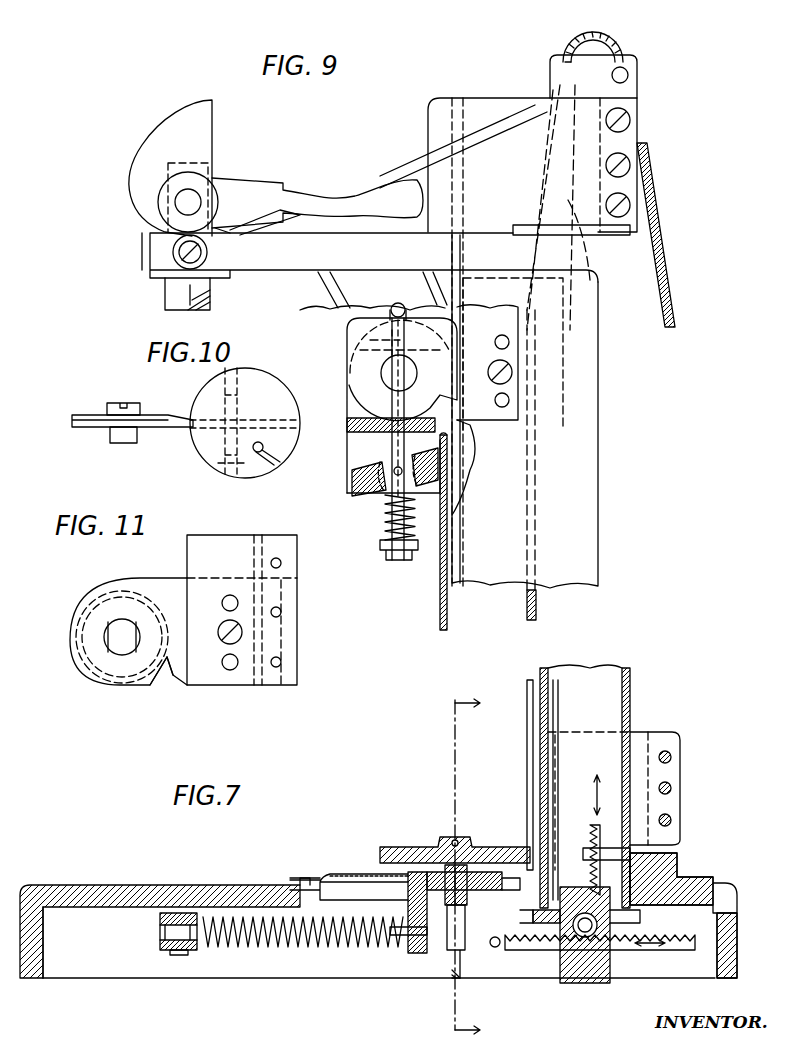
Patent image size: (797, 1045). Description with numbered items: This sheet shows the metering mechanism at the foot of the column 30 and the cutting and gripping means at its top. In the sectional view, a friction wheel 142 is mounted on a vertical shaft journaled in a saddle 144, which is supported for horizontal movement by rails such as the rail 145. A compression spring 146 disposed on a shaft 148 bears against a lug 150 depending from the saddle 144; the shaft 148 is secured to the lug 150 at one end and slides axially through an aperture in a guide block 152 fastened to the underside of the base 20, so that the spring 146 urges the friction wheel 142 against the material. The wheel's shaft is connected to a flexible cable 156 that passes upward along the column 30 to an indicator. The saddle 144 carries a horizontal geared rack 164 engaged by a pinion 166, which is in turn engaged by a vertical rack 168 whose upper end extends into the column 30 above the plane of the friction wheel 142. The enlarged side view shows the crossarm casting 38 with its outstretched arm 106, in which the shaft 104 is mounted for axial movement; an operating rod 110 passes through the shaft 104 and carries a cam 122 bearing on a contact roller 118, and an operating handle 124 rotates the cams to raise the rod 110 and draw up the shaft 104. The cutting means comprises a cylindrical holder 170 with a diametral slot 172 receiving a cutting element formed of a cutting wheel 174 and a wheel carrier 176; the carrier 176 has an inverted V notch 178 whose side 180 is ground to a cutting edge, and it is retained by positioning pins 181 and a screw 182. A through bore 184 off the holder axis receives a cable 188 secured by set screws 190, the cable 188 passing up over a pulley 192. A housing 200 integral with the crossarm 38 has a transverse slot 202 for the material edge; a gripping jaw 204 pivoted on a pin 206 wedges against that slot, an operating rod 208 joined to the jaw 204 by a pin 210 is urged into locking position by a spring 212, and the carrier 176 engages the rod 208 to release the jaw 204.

In FIG. 7, the base 20 is at (182, 885).
In FIG. 7, the column 30 is at (632, 705).
In FIG. 9, the crossarm 38 is at (425, 98).
In FIG. 9, the shaft 104 is at (178, 290).
In FIG. 9, the outstretched arm 106 is at (290, 262).
In FIG. 9, the operating rod 110 is at (190, 202).
In FIG. 9, the contact roller 118 is at (178, 254).
In FIG. 9, the cam 122 is at (152, 163).
In FIG. 9, the operating handle 124 is at (348, 195).
In FIG. 7, the friction wheel 142 is at (495, 847).
In FIG. 7, the saddle 144 is at (385, 876).
In FIG. 7, the rail 145 is at (335, 878).
In FIG. 7, the compression spring 146 is at (255, 945).
In FIG. 7, the shaft 148 is at (280, 947).
In FIG. 7, the lug 150 is at (408, 948).
In FIG. 7, the guide block 152 is at (160, 950).
In FIG. 7, the flexible cable 156 is at (462, 957).
In FIG. 7, the geared rack 164 is at (675, 942).
In FIG. 7, the pinion 166 is at (578, 887).
In FIG. 7, the rack 168 is at (590, 840).
In FIG. 9, the holder 170 is at (490, 420).
In FIG. 11, the holder 170 is at (215, 535).
In FIG. 10, the slot 172 is at (215, 428).
In FIG. 10, the cutting wheel 174 is at (95, 415).
In FIG. 9, the wheel carrier 176 is at (350, 330).
In FIG. 10, the wheel carrier 176 is at (90, 440).
In FIG. 11, the wheel carrier 176 is at (160, 578).
In FIG. 11, the notch 178 is at (160, 670).
In FIG. 11, the side of notch 180 is at (173, 678).
In FIG. 9, the positioning pins 181 is at (495, 342).
In FIG. 11, the positioning pins 181 is at (224, 600).
In FIG. 9, the screw 182 is at (490, 372).
In FIG. 11, the screw 182 is at (220, 636).
In FIG. 9, the through bore 184 is at (345, 426).
In FIG. 10, the through bore 184 is at (262, 447).
In FIG. 9, the cable 188 is at (525, 604).
In FIG. 11, the set screws 190 is at (282, 565).
In FIG. 9, the pulley 192 is at (570, 54).
In FIG. 9, the housing 200 is at (348, 400).
In FIG. 9, the slot 202 is at (436, 490).
In FIG. 9, the gripping jaw 204 is at (352, 468).
In FIG. 9, the pin 206 is at (360, 478).
In FIG. 9, the operating rod 208 is at (345, 345).
In FIG. 9, the pin 210 is at (395, 468).
In FIG. 9, the spring 212 is at (372, 516).